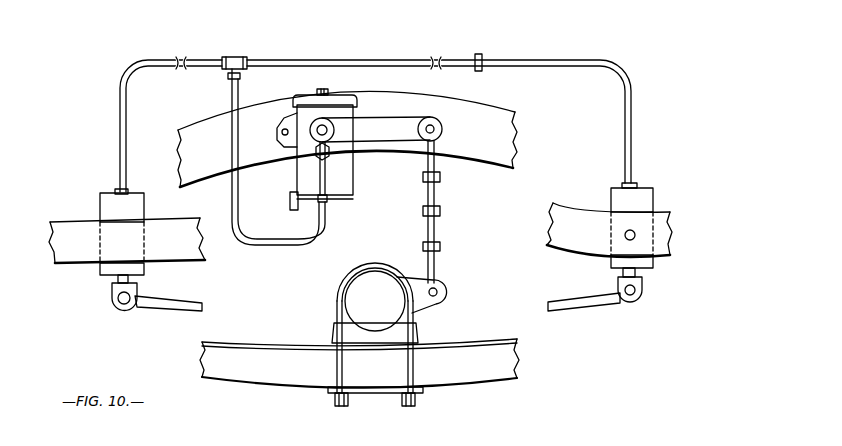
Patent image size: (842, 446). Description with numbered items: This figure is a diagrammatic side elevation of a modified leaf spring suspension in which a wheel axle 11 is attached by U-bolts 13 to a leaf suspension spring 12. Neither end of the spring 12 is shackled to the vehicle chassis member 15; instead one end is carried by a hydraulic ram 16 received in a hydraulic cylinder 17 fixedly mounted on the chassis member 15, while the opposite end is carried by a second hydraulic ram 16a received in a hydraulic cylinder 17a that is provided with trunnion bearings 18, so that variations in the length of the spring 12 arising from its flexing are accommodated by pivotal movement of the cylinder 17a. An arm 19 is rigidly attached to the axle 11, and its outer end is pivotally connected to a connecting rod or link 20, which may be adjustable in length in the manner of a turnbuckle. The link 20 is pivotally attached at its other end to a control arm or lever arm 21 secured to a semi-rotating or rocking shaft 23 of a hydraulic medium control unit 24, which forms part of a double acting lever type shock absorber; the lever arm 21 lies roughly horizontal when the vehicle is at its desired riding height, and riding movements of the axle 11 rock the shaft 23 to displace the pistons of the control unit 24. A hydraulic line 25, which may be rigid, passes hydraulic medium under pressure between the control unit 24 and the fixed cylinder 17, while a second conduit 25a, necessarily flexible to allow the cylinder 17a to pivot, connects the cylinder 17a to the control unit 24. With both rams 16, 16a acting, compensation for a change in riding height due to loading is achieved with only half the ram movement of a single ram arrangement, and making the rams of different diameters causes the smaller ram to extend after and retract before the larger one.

The wheel axle 11 is at (378, 295).
The leaf suspension spring 12 is at (196, 312).
The U-bolts 13 is at (407, 372).
The vehicle chassis member 15 is at (90, 250).
The hydraulic ram 16 is at (118, 279).
The second hydraulic ram 16a is at (643, 278).
The hydraulic cylinder 17 is at (123, 204).
The hydraulic cylinder 17a is at (640, 202).
The trunnion bearings 18 is at (633, 238).
The arm 19 is at (446, 289).
The connecting rod or link 20 is at (433, 232).
The control arm or lever arm 21 is at (375, 130).
The rocking shaft 23 is at (327, 133).
The hydraulic medium control unit 24 is at (342, 192).
The hydraulic line 25 is at (122, 78).
The second conduit 25a is at (570, 60).